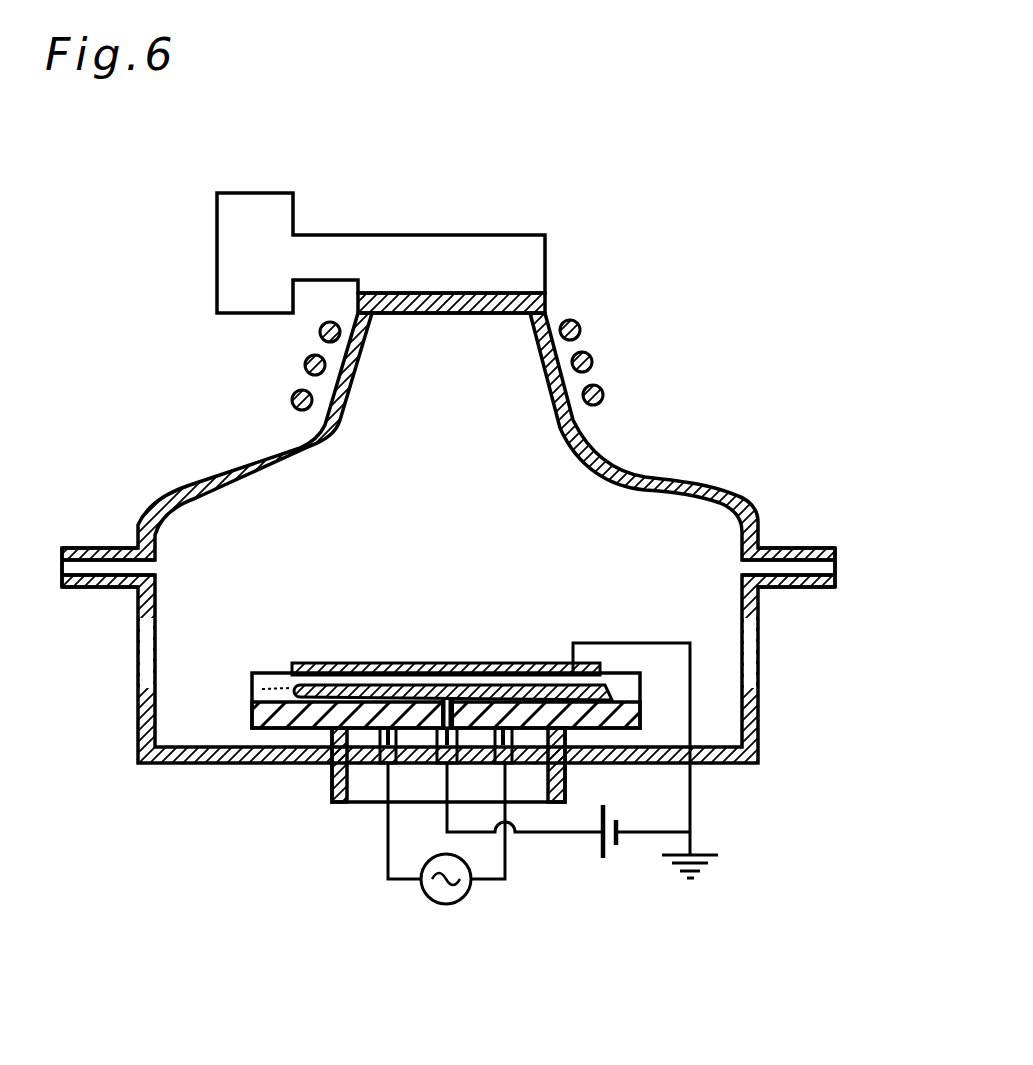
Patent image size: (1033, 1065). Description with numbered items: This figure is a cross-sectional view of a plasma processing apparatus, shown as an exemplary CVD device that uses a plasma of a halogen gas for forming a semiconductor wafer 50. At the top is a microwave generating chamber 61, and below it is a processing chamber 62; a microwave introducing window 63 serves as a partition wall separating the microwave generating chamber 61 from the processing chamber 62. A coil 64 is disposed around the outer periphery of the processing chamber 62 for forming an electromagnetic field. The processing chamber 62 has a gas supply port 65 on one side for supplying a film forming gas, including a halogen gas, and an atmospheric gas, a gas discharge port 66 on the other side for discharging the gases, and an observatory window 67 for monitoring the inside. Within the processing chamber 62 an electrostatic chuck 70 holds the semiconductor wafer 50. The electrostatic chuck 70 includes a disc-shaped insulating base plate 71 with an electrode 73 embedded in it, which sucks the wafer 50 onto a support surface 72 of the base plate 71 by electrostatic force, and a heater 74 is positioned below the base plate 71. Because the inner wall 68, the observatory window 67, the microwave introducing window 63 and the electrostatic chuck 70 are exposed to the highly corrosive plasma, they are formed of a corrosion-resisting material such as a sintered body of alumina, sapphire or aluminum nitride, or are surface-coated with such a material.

The semiconductor wafer 50 is at (465, 663).
The microwave generating chamber 61 is at (503, 247).
The processing chamber 62 is at (463, 538).
The microwave introducing window 63 is at (508, 298).
The coil 64 is at (305, 362).
The gas supply port 65 is at (88, 562).
The gas discharge port 66 is at (800, 548).
The observatory window 67 is at (148, 655).
The inner wall 68 is at (463, 538).
The electrostatic chuck 70 is at (420, 720).
The insulating base plate 71 is at (258, 690).
The support surface 72 is at (270, 673).
The electrode 73 is at (282, 700).
The heater 74 is at (300, 728).